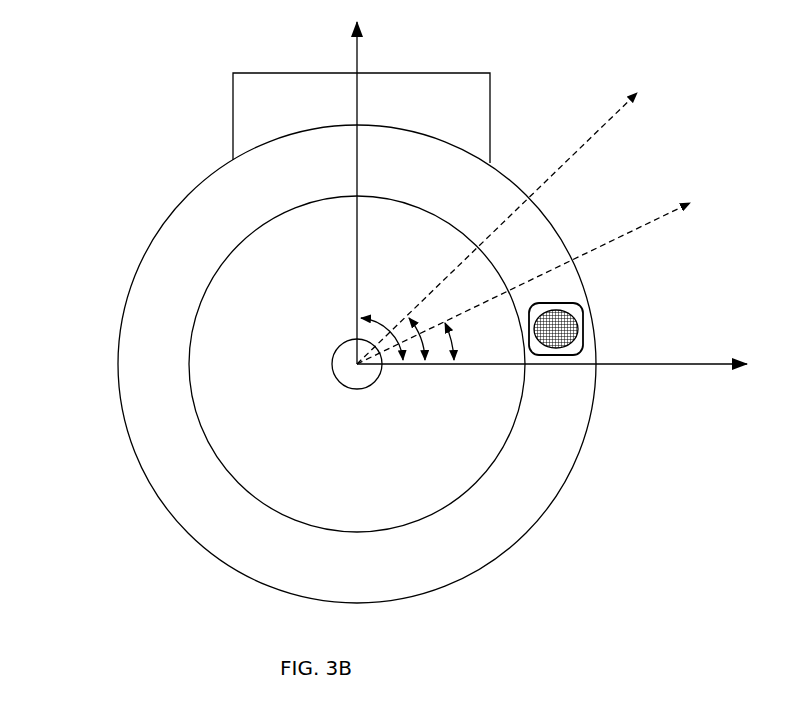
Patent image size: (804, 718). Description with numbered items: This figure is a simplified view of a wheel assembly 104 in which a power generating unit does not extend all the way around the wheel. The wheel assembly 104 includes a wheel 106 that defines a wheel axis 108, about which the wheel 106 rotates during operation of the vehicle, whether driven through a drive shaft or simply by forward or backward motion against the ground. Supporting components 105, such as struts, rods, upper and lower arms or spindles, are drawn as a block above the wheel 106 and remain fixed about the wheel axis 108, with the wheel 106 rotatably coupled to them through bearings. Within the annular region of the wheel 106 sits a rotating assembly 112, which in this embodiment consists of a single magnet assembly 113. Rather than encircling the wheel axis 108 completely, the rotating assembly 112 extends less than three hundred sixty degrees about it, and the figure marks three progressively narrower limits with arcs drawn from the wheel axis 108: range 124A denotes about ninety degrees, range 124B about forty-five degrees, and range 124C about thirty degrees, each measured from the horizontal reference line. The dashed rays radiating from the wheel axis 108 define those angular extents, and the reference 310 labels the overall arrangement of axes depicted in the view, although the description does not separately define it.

The wheel assembly 104 is at (118, 92).
The supporting components 105 is at (233, 124).
The wheel 106 is at (130, 292).
The wheel axis 108 is at (350, 373).
The rotating assembly 112 is at (583, 333).
The magnet assembly 113 is at (565, 362).
The range 124A is at (376, 318).
The range 124B is at (432, 346).
The range 124C is at (455, 345).
The coordinate system 310 is at (688, 58).